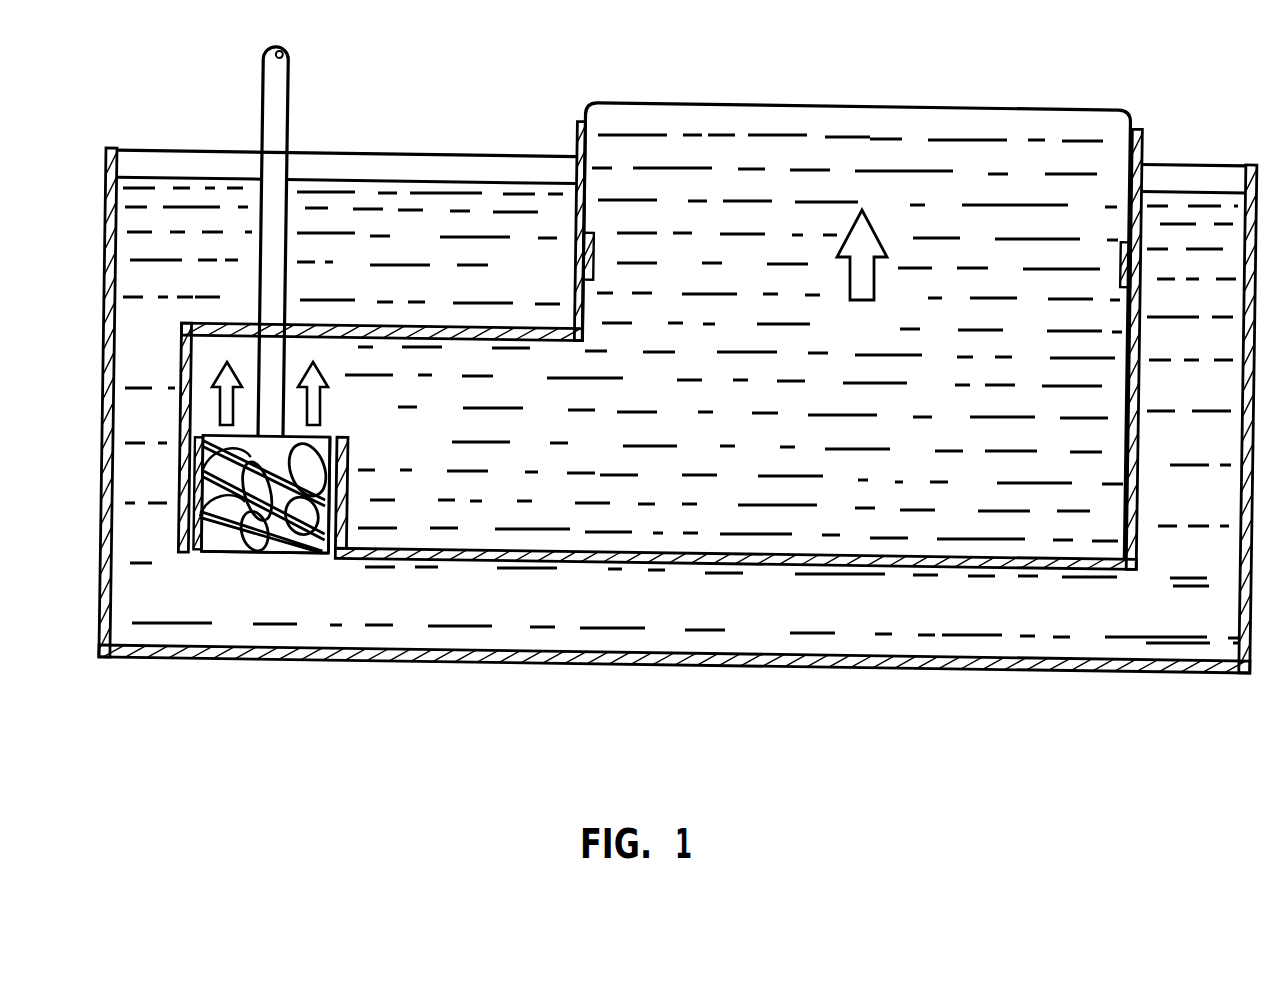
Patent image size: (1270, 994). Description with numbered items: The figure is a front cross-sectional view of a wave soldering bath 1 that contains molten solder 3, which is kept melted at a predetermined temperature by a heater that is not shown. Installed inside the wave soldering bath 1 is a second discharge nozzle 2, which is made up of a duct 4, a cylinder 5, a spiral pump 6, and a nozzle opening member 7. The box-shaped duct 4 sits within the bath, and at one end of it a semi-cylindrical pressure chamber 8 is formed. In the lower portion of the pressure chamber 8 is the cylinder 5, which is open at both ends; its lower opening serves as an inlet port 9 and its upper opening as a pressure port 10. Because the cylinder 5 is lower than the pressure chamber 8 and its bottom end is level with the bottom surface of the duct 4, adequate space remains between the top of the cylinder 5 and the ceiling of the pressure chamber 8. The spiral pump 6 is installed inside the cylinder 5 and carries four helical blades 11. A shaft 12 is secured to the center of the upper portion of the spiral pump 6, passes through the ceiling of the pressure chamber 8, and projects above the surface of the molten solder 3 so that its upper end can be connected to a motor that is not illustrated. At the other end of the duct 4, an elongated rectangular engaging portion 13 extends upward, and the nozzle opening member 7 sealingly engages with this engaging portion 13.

The wave soldering bath 1 is at (636, 713).
The second discharge nozzle 2 is at (738, 371).
The molten solder 3 is at (405, 253).
The duct 4 is at (456, 560).
The cylinder 5 is at (352, 476).
The spiral pump 6 is at (271, 547).
The nozzle opening member 7 is at (577, 142).
The pressure chamber 8 is at (353, 474).
The inlet port 9 is at (336, 549).
The pressure port 10 is at (332, 436).
The helical blades 11 is at (200, 490).
The shaft 12 is at (287, 87).
The engaging portion 13 is at (577, 292).